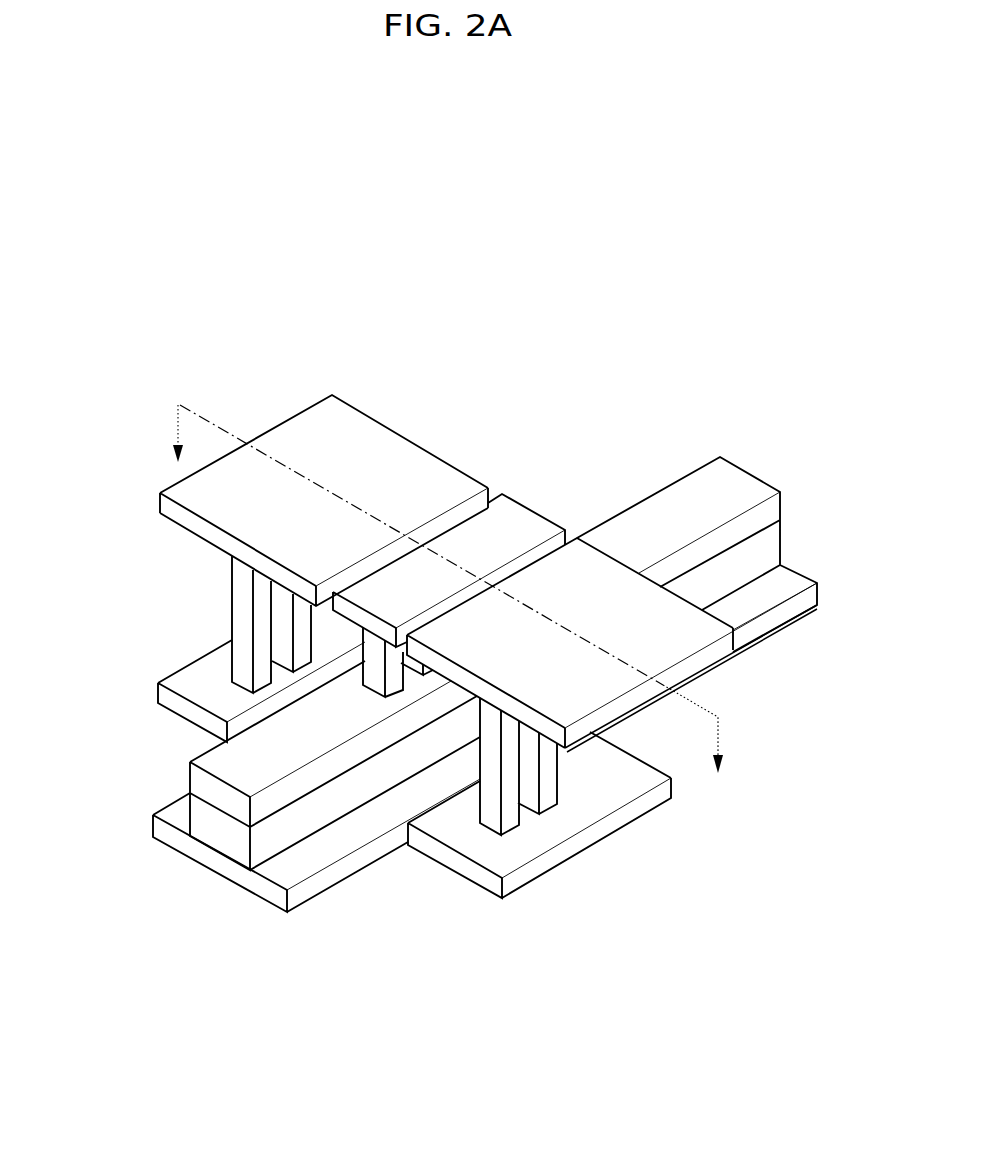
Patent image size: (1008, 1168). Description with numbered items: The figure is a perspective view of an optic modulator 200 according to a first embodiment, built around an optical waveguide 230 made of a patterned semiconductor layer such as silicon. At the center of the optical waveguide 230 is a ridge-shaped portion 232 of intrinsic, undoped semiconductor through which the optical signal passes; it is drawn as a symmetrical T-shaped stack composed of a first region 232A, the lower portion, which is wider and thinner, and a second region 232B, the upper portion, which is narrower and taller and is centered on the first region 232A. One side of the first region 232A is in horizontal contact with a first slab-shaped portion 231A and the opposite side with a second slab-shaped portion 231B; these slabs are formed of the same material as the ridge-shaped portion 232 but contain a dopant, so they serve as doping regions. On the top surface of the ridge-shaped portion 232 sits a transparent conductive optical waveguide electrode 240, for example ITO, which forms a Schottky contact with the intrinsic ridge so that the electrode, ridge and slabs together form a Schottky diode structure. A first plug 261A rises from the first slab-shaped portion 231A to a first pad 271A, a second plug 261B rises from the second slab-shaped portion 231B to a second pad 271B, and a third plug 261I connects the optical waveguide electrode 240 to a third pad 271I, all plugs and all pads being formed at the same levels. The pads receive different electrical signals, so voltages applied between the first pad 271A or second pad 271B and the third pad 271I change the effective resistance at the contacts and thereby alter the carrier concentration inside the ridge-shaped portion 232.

The optic modulator 200 is at (492, 293).
The optical waveguide 230 is at (781, 424).
The first slab-shaped portion 231A is at (590, 833).
The second slab-shaped portion 231B is at (193, 684).
The ridge-shaped portion 232 is at (297, 869).
The first region 232A is at (173, 832).
The second region 232B is at (222, 825).
The optical waveguide electrode 240 is at (212, 786).
The first plug 261A is at (493, 803).
The second plug 261B is at (245, 600).
The third plug 261I is at (385, 663).
The first pad 271A is at (645, 649).
The second pad 271B is at (302, 437).
The third pad 271I is at (512, 527).